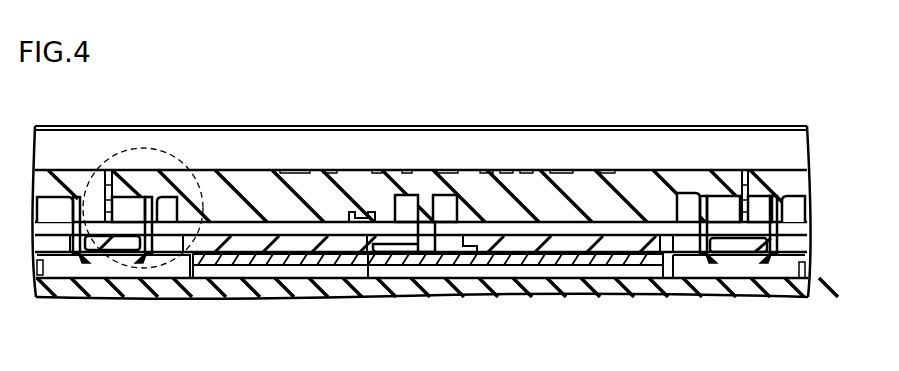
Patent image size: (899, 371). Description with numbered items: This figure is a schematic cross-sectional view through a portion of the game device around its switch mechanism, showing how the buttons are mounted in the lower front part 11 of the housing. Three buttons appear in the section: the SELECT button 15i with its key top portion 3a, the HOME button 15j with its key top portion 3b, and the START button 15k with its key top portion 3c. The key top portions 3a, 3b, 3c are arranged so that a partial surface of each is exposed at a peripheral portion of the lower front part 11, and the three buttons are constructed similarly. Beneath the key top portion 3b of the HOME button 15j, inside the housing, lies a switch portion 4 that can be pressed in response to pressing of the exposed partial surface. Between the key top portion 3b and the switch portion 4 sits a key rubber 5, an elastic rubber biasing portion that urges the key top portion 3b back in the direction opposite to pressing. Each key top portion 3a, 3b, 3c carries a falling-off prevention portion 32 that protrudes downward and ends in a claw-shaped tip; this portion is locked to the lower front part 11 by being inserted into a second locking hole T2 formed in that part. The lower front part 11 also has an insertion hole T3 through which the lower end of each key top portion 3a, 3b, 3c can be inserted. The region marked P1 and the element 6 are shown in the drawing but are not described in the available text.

The key top portion 3a is at (43, 175).
The key top portion 3b is at (352, 177).
The key top portion 3c is at (792, 177).
The SELECT button 15i is at (82, 177).
The HOME button 15j is at (303, 190).
The START button 15k is at (770, 173).
The lower front part 11 is at (420, 152).
The region P1 is at (175, 152).
The second locking hole T2 is at (80, 243).
The falling-off prevention portion 32 is at (80, 257).
The insertion hole T3 is at (395, 245).
The switch portion 4 is at (412, 267).
The key rubber 5 is at (435, 258).
The base substrate 6 is at (483, 288).